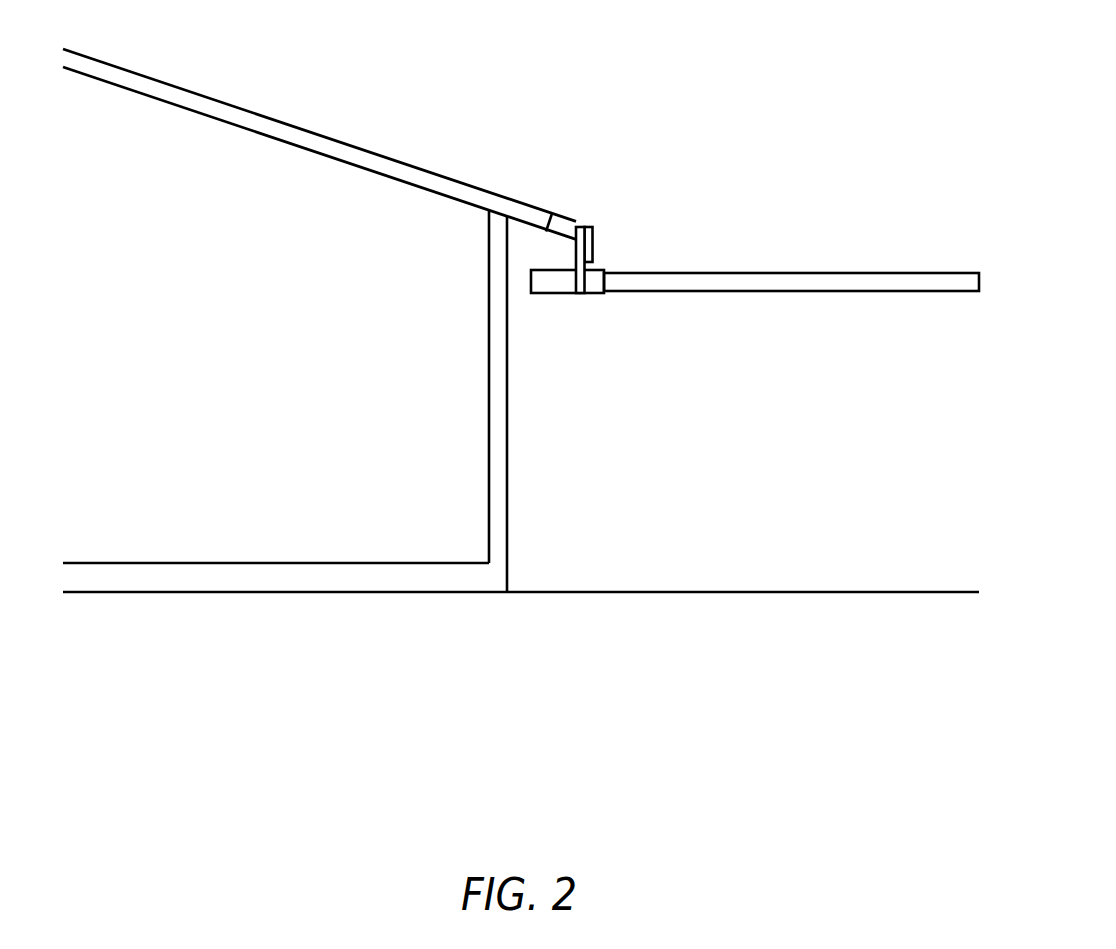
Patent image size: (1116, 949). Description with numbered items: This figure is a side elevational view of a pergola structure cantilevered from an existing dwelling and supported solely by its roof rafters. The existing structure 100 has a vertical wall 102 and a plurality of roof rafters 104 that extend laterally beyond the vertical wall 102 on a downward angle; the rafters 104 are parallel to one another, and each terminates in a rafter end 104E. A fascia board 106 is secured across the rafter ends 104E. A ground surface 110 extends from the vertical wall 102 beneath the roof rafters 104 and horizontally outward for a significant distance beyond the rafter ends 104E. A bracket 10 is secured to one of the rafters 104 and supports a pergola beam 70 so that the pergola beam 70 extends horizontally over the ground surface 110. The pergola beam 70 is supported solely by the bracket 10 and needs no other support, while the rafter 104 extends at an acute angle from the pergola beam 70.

The bracket 10 is at (541, 249).
The pergola beam 70 is at (813, 272).
The existing structure 100 is at (299, 642).
The vertical wall 102 is at (508, 497).
The roof rafter 104 is at (307, 138).
The rafter end 104E is at (584, 224).
The fascia board 106 is at (593, 239).
The ground surface 110 is at (715, 592).